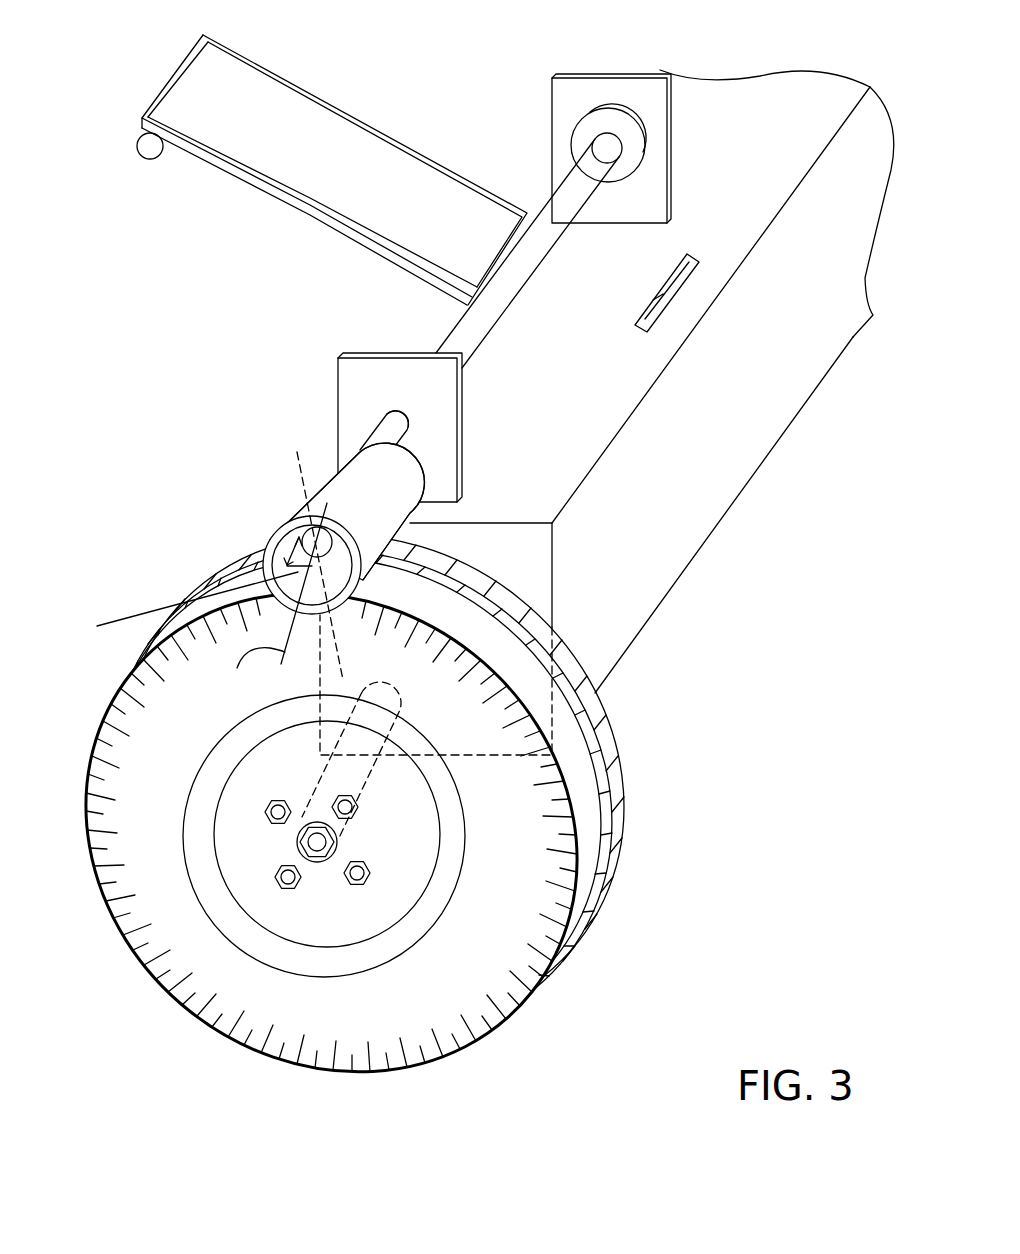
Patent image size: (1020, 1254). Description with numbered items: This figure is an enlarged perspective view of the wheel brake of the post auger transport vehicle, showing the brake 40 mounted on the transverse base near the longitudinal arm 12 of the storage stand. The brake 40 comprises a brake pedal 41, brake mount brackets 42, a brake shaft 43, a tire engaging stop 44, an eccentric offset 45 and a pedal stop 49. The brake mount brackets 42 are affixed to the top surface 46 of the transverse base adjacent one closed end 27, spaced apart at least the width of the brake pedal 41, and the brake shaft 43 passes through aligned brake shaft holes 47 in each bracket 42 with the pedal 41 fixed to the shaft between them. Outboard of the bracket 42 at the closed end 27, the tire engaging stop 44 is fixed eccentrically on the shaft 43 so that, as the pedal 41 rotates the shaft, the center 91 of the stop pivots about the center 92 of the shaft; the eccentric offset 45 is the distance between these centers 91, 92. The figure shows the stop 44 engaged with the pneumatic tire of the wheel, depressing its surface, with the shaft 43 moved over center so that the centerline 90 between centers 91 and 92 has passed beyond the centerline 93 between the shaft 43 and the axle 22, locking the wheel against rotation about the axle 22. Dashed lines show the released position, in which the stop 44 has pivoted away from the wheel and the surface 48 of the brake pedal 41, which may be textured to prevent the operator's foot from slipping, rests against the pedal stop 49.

The longitudinal arm 12 is at (785, 378).
The axle 22 is at (351, 780).
The closed end 27 is at (527, 567).
The brake 40 is at (198, 288).
The brake pedal 41 is at (290, 80).
The brake mount bracket 42 is at (653, 110).
The brake shaft 43 is at (470, 330).
The tire engaging stop 44 is at (265, 549).
The eccentric offset 45 is at (307, 540).
The top surface 46 is at (505, 513).
The brake shaft hole 47 is at (628, 160).
The surface 48 is at (320, 157).
The pedal stop 49 is at (682, 275).
The centerline 90 is at (249, 676).
The center 91 is at (176, 608).
The center 92 is at (315, 530).
The centerline 93 is at (316, 535).